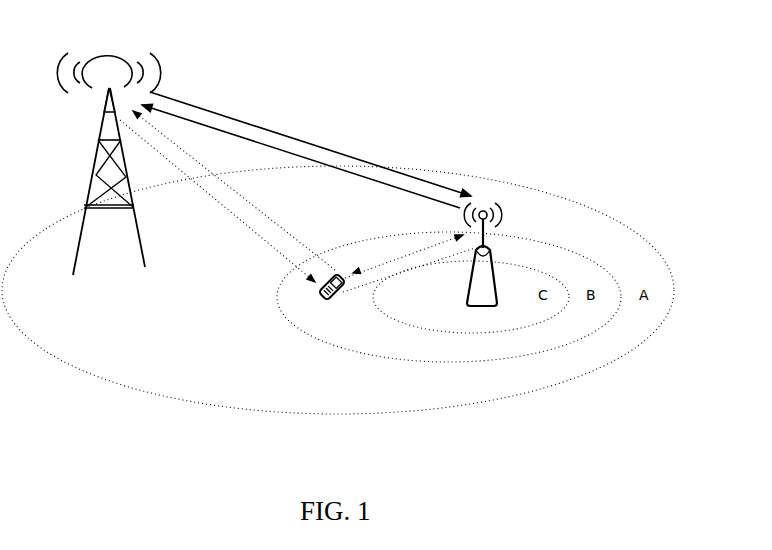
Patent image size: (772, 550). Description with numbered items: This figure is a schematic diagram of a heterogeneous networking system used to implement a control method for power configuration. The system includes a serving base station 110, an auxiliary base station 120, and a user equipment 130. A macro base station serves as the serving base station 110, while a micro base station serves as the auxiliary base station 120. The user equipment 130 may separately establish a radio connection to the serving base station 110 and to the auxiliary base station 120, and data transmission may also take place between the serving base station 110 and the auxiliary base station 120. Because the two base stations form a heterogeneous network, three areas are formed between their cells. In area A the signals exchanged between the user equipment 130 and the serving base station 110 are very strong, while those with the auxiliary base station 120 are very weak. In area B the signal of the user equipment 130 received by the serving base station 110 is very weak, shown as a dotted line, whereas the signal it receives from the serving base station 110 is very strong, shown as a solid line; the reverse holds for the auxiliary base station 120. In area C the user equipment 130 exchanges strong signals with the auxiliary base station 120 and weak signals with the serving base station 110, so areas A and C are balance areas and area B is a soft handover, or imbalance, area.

The serving base station 110 is at (112, 43).
The auxiliary base station 120 is at (489, 193).
The user equipment 130 is at (342, 270).